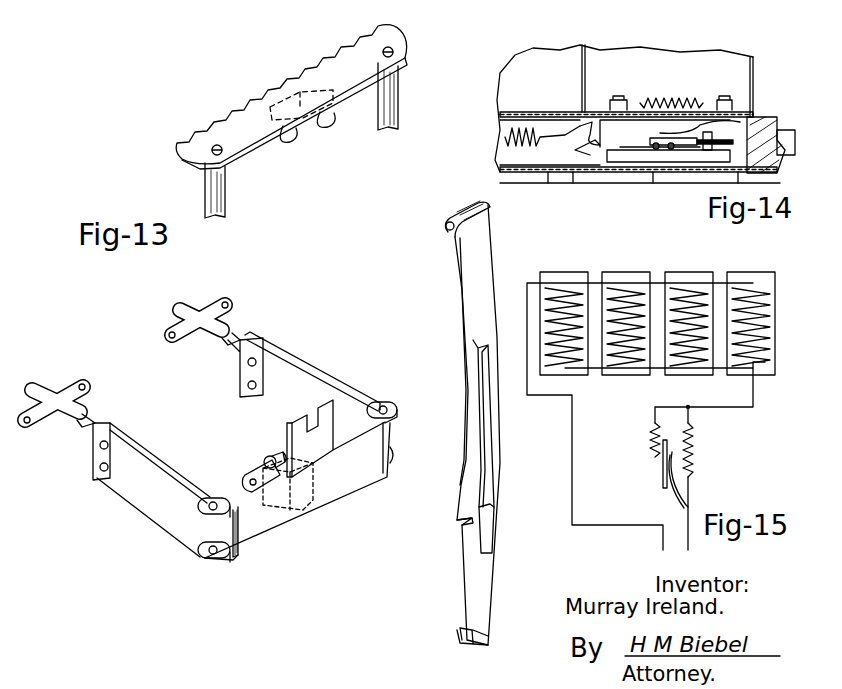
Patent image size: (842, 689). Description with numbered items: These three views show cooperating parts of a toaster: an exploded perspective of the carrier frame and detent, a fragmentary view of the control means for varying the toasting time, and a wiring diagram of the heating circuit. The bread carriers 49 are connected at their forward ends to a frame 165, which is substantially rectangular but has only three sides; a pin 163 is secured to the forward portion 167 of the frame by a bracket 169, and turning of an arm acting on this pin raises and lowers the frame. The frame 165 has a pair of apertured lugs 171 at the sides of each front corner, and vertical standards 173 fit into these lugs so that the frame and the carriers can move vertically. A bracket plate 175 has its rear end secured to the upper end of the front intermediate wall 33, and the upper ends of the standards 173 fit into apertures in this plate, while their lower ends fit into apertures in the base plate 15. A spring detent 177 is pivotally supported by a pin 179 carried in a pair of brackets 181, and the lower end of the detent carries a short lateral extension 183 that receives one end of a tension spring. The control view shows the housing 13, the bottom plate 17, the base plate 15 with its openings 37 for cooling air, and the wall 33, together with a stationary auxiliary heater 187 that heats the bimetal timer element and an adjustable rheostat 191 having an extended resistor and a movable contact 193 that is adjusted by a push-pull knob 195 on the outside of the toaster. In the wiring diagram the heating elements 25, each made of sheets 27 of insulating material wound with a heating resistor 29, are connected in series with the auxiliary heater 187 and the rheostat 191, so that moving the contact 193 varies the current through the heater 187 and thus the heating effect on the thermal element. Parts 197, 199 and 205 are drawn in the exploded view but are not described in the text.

In FIG. 14, the housing 13 is at (772, 166).
In FIG. 14, the base plate 15 is at (597, 112).
In FIG. 14, the bottom plate 17 is at (556, 178).
In FIG. 15, the heating elements 25 is at (740, 276).
In FIG. 15, the sheets of electric insulating material 27 is at (730, 374).
In FIG. 15, the heating resistor 29 is at (765, 368).
In FIG. 14, the front intermediate wall 33 is at (586, 62).
In FIG. 14, the openings in base plate 37 is at (533, 112).
In FIG. 13, the bread carriers 49 is at (62, 385).
In FIG. 13, the pin 163 is at (266, 456).
In FIG. 13, the frame 165 is at (168, 453).
In FIG. 13, the forward portion of frame 167 is at (323, 503).
In FIG. 13, the bracket 169 is at (244, 477).
In FIG. 13, the apertured lugs 171 is at (383, 402).
In FIG. 13, the vertical standards 173 is at (205, 188).
In FIG. 13, the bracket plate 175 is at (385, 33).
In FIG. 13, the spring detent 177 is at (463, 293).
In FIG. 13, the pin 179 is at (284, 143).
In FIG. 13, the brackets 181 is at (324, 128).
In FIG. 13, the lateral extension 183 is at (463, 641).
In FIG. 14, the auxiliary heater 187 is at (661, 98).
In FIG. 15, the auxiliary heater 187 is at (694, 454).
In FIG. 14, the adjustable rheostat 191 is at (626, 162).
In FIG. 15, the adjustable rheostat 191 is at (650, 446).
In FIG. 14, the movable contact 193 is at (693, 146).
In FIG. 15, the movable contact 193 is at (663, 481).
In FIG. 14, the push-pull knob 195 is at (786, 130).
In FIG. 13, the upright 197 is at (287, 428).
In FIG. 13, the step 199 is at (458, 523).
In FIG. 13, the tongue 205 is at (488, 345).